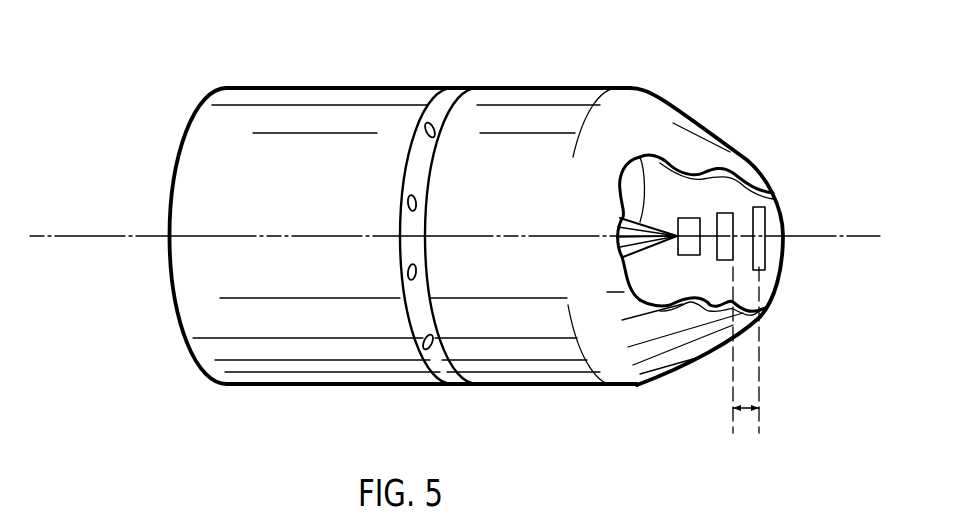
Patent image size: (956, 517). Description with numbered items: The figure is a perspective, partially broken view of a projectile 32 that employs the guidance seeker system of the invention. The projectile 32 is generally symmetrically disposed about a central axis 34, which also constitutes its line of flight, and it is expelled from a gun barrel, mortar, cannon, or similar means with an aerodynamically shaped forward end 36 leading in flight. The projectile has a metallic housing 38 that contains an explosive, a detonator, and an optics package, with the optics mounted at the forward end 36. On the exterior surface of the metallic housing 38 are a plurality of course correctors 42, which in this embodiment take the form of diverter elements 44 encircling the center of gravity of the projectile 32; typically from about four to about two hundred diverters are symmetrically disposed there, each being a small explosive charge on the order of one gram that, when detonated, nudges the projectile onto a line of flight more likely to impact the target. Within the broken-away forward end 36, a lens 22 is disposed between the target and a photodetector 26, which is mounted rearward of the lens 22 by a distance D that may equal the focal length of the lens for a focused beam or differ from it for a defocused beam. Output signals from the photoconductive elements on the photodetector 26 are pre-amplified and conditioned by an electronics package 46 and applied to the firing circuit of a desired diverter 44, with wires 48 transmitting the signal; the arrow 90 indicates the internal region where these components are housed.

The projectile 32 is at (483, 75).
The central axis 34 is at (101, 238).
The forward end 36 is at (770, 167).
The metallic housing 38 is at (552, 117).
The course correctors 42 is at (457, 392).
The diverter elements 44 is at (430, 350).
The electronics package 46 is at (690, 222).
The wires 48 is at (638, 172).
The lens 22 is at (763, 220).
The photodetector 26 is at (727, 252).
The flow passage 90 is at (744, 201).
The distance D is at (746, 412).